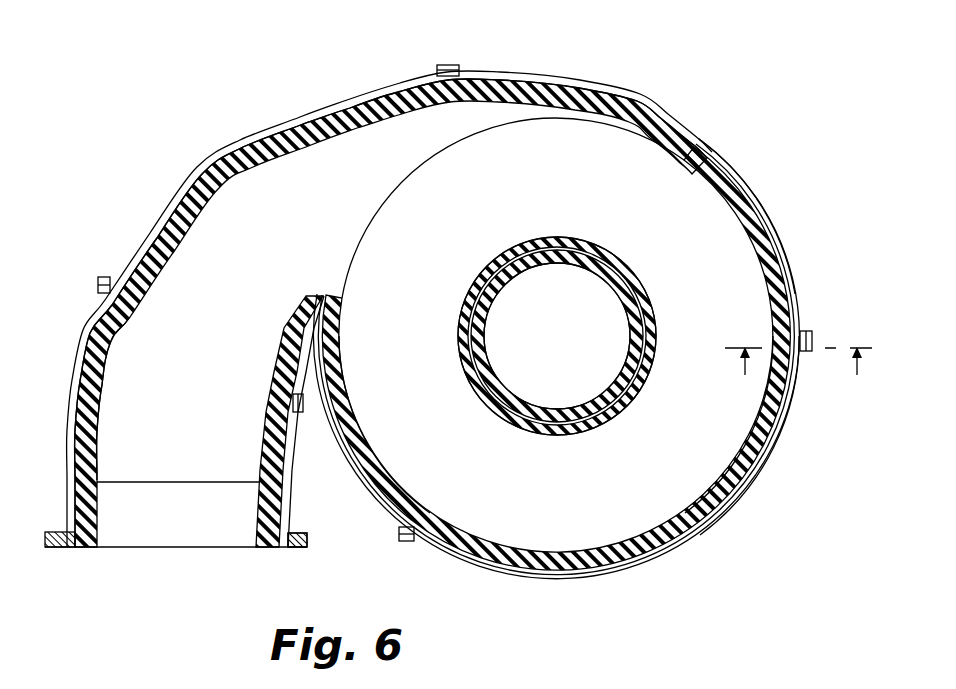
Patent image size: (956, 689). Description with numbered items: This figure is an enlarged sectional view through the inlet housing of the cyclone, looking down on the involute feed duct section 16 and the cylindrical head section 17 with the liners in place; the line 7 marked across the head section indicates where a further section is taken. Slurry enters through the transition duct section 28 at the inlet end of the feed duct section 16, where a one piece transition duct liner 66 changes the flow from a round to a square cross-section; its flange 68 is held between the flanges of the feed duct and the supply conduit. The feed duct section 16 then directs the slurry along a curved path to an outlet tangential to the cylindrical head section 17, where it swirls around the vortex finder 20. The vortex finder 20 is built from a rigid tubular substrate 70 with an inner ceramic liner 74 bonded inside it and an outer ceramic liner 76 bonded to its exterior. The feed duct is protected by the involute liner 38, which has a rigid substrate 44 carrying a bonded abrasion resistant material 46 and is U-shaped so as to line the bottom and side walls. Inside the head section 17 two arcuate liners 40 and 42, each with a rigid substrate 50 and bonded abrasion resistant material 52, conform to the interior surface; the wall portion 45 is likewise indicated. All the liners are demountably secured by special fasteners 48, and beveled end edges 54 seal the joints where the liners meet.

The feed duct section 16 is at (199, 171).
The involute liner 38 is at (196, 240).
The abrasion resistant material 46 is at (124, 308).
The rigid substrate 44 is at (124, 323).
The abrasion resistant material 52 is at (775, 290).
The rigid substrate 50 is at (770, 262).
The beveled end edges 54 is at (620, 118).
The housing wall portion 45 is at (785, 227).
The cylindrical head section 17 is at (748, 486).
The arcuate liner 40 is at (725, 462).
The arcuate liner 42 is at (437, 496).
The vortex finder 20 is at (628, 414).
The rigid tubular substrate 70 is at (649, 326).
The inner ceramic liner 74 is at (620, 383).
The outer ceramic liner 76 is at (480, 390).
The special fasteners 48 is at (430, 68).
The transition duct section 28 is at (130, 553).
The transition duct liner 66 is at (172, 523).
The flange 68 is at (286, 548).
The section line 7- 7 is at (798, 378).